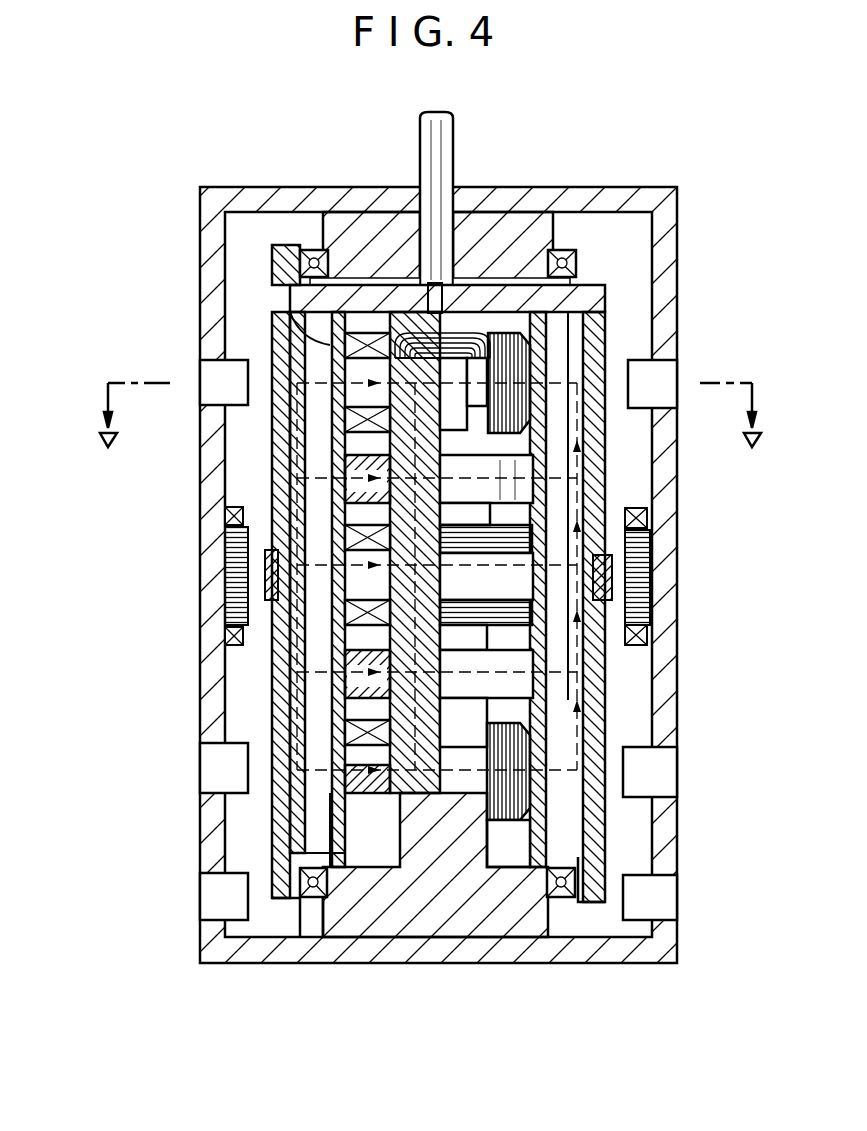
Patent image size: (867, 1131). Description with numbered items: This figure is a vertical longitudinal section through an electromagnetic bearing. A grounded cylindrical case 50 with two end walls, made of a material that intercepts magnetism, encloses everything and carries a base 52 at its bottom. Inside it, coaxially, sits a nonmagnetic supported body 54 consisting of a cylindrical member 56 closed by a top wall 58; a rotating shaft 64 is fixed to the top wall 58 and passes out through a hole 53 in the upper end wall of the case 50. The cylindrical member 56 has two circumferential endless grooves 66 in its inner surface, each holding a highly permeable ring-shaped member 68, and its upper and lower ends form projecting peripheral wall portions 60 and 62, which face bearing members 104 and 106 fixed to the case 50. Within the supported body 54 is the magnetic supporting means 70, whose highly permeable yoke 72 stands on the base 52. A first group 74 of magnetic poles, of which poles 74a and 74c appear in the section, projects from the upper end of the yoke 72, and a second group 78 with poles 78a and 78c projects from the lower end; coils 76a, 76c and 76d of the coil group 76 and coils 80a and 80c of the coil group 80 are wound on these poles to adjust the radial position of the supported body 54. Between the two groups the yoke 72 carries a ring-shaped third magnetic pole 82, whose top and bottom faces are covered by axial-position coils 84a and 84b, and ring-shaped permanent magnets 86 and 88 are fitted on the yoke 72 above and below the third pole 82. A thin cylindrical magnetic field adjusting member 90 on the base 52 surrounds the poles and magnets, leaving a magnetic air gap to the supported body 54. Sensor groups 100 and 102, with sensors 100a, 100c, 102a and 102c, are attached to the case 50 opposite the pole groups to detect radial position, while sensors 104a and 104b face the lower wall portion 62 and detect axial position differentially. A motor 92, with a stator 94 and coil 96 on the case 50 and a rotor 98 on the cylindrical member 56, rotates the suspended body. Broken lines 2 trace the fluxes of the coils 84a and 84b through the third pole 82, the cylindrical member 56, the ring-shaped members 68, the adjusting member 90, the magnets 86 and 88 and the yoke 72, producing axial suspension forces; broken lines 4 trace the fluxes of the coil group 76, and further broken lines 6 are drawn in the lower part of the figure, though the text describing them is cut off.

The broken lines 2 is at (438, 576).
The broken lines 4 is at (486, 447).
The rotor section 6 is at (473, 716).
The case 50 is at (678, 465).
The base 52 is at (473, 890).
The hole 53 is at (415, 192).
The supported body 54 is at (608, 670).
The cylindrical member 56 is at (590, 475).
The top wall 58 is at (522, 293).
The projecting peripheral wall portion 60 is at (283, 258).
The projecting peripheral wall portion 62 is at (272, 888).
The rotating shaft 64 is at (440, 124).
The endless grooves 66 is at (293, 330).
The ring-shaped member 68 is at (350, 505).
The magnetic supporting means 70 is at (350, 700).
The yoke 72 is at (433, 840).
The first group of magnetic poles 74 is at (357, 393).
The magnetic pole 74a is at (340, 372).
The magnetic pole 74c is at (550, 352).
The coil group 76 is at (362, 330).
The coil 76a is at (335, 345).
The coil 76c is at (520, 385).
The coil 76d is at (448, 340).
The second group of magnetic poles 78 is at (345, 822).
The magnetic pole 78a is at (350, 745).
The magnetic pole 78c is at (532, 753).
The coil group 80 is at (385, 830).
The coil 80a is at (382, 822).
The coil 80c is at (533, 787).
The ring-shaped third magnetic pole 82 is at (228, 558).
The coil 84a is at (350, 548).
The coil 84b is at (230, 636).
The ring-shaped permanent magnet 86 is at (350, 457).
The ring-shaped permanent magnet 88 is at (270, 595).
The magnetic field adjusting member 90 is at (347, 430).
The motor 92 is at (664, 597).
The stator 94 is at (640, 570).
The coil 96 is at (645, 638).
The rotor 98 is at (648, 537).
The sensor group 100 is at (196, 378).
The sensor 100a is at (200, 393).
The sensor 100c is at (677, 382).
The sensor group 102 is at (198, 793).
The sensor 102a is at (200, 775).
The sensor 102c is at (666, 786).
The bearing member 104 is at (328, 258).
The sensor 104a is at (200, 908).
The sensor 104b is at (670, 906).
The bearing member 106 is at (307, 900).